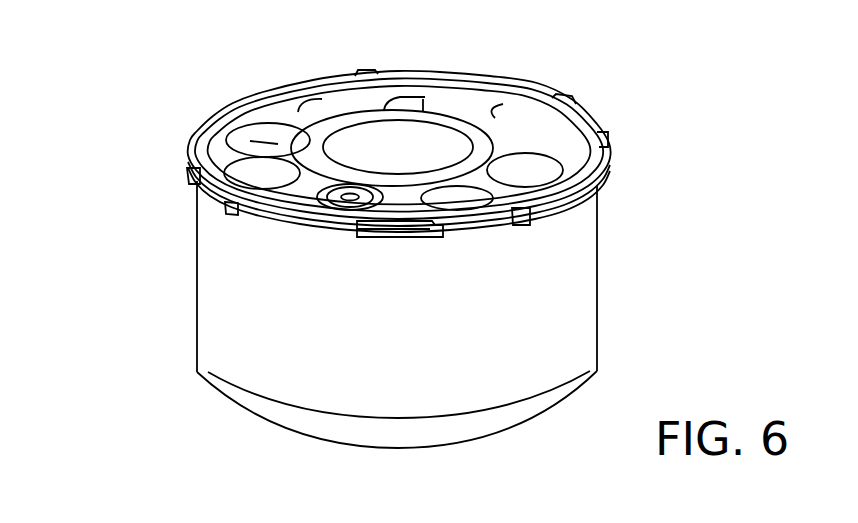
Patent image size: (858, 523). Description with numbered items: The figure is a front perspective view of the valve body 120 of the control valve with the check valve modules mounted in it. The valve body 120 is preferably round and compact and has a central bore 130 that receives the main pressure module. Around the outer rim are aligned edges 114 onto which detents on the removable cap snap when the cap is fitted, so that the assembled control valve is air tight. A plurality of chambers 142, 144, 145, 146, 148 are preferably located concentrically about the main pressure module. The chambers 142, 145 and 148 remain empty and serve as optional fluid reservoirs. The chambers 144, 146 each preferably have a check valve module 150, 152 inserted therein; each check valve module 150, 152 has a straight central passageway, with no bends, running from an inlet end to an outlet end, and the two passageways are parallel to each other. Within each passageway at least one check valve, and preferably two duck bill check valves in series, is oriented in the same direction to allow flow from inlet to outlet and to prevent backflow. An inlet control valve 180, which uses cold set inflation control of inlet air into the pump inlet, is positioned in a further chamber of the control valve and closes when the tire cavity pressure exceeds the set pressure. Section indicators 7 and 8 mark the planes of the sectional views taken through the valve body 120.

The aligned edges 114 is at (498, 217).
The valve body 120 is at (580, 308).
The central bore 130 is at (410, 143).
The chamber 142 is at (408, 105).
The chamber 144 is at (568, 172).
The chamber 145 is at (468, 204).
The chamber 146 is at (318, 207).
The chamber 148 is at (197, 163).
The check valve module 150 is at (258, 132).
The check valve module 152 is at (577, 170).
The inlet control valve 180 is at (327, 179).
The section line 7- 7 is at (197, 133).
The section line 8- 8 is at (471, 157).